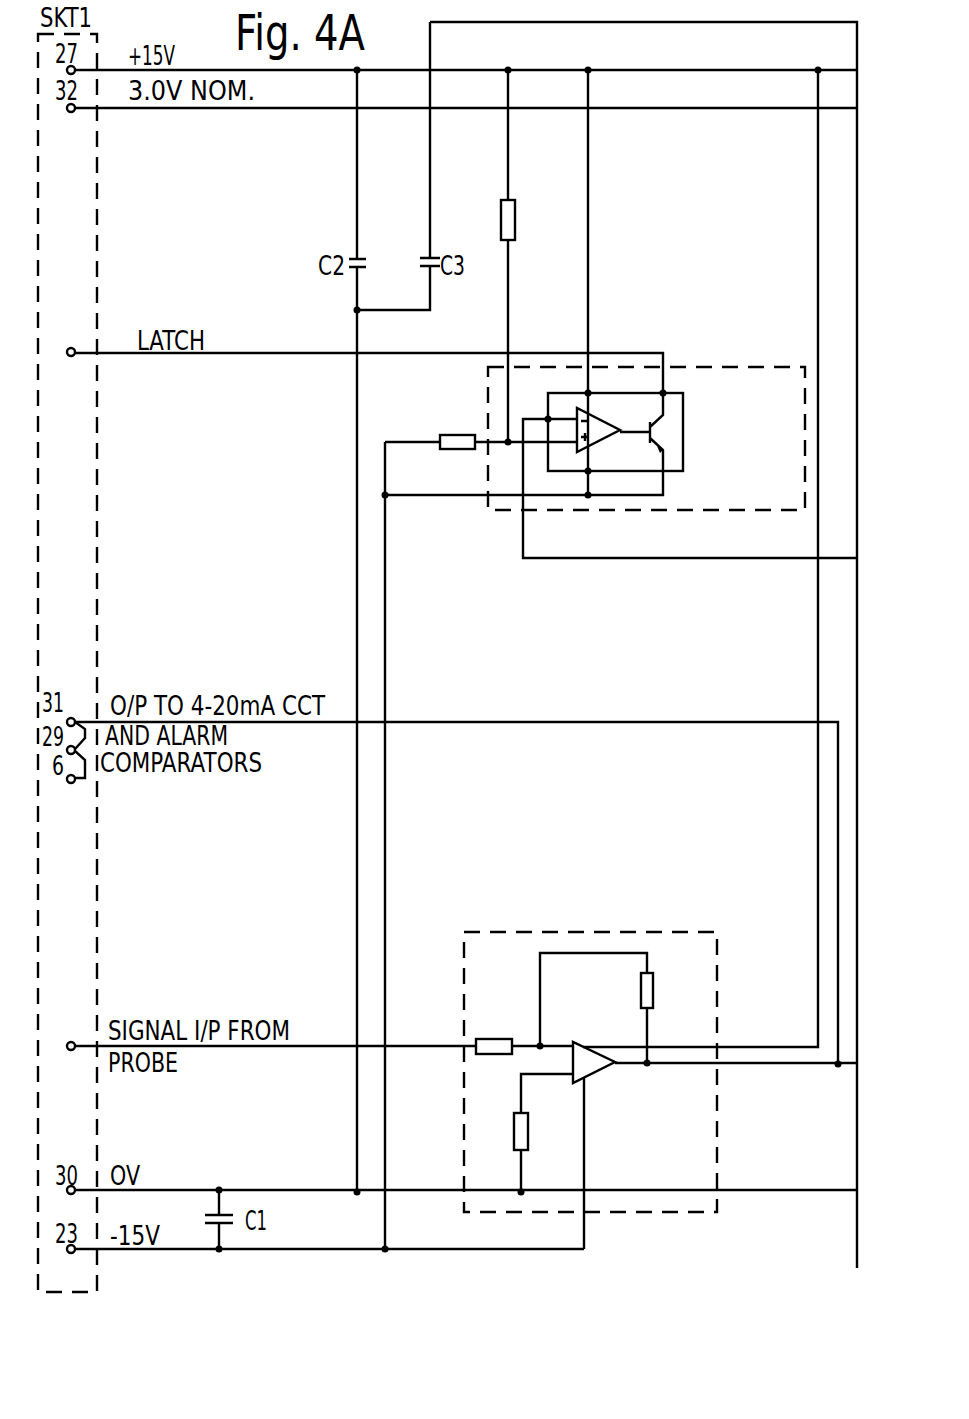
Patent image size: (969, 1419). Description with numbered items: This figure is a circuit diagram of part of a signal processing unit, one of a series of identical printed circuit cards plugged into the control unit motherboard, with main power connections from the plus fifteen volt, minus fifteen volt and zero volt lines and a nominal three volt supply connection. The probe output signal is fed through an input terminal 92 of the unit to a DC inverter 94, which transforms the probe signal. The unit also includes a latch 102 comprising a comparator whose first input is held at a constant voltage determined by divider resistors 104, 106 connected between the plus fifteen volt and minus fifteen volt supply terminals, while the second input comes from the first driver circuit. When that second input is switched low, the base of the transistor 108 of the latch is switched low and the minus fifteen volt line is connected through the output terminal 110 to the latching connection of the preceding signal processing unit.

The input terminal 92 is at (74, 1050).
The DC inverter 94 is at (517, 932).
The latch 102 is at (646, 415).
The divider resistor 104 is at (440, 430).
The divider resistor 106 is at (502, 220).
The transistor 108 is at (658, 443).
The output terminal 110 is at (74, 356).